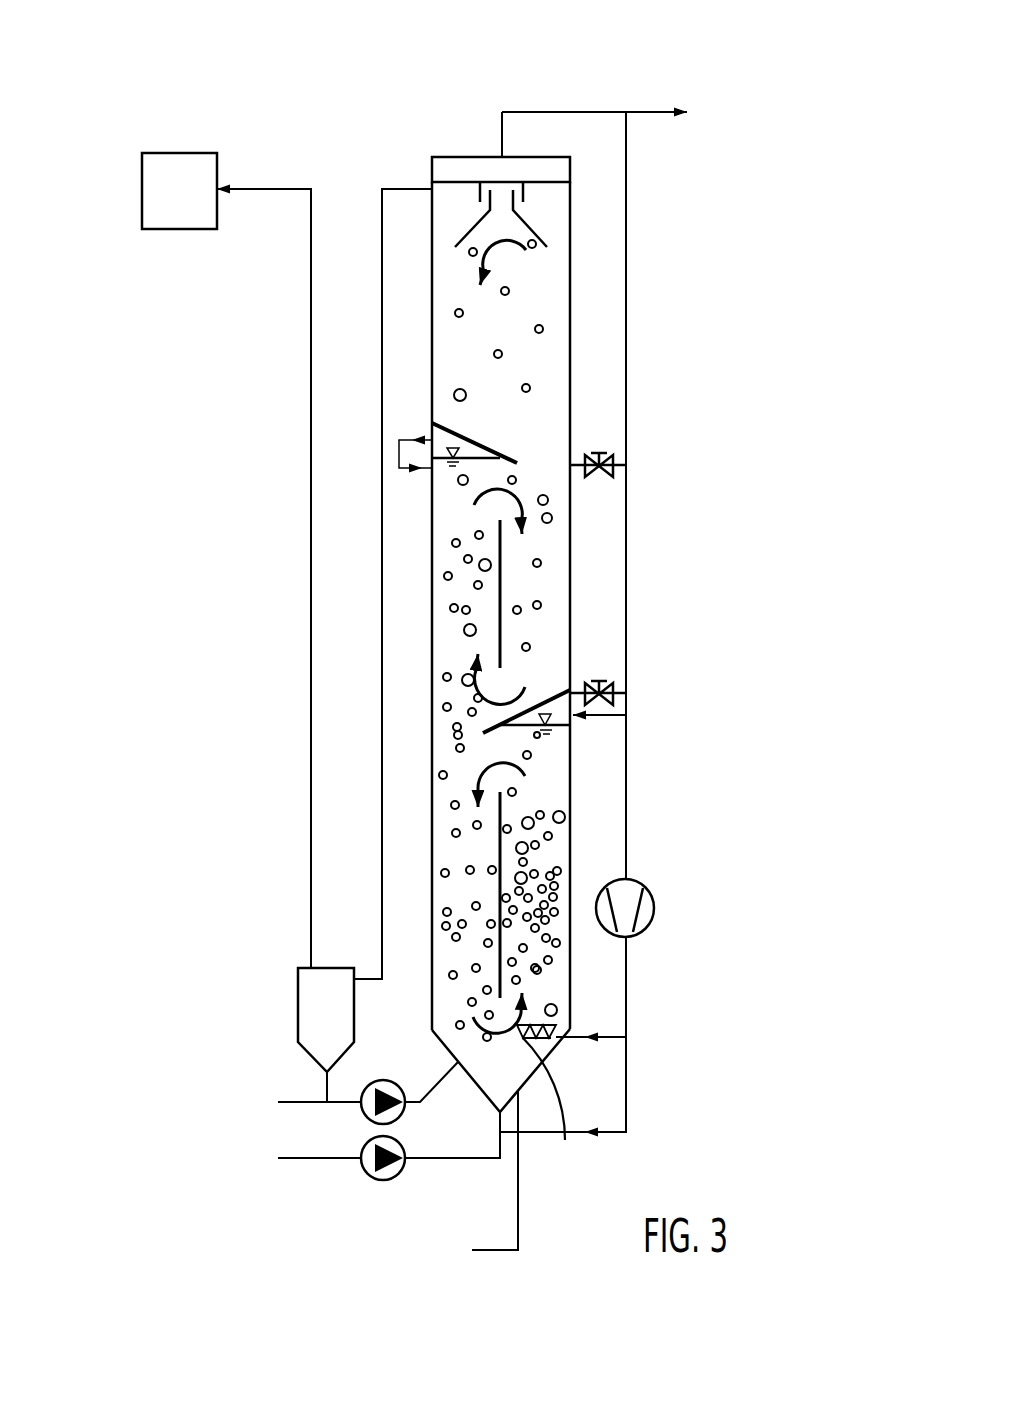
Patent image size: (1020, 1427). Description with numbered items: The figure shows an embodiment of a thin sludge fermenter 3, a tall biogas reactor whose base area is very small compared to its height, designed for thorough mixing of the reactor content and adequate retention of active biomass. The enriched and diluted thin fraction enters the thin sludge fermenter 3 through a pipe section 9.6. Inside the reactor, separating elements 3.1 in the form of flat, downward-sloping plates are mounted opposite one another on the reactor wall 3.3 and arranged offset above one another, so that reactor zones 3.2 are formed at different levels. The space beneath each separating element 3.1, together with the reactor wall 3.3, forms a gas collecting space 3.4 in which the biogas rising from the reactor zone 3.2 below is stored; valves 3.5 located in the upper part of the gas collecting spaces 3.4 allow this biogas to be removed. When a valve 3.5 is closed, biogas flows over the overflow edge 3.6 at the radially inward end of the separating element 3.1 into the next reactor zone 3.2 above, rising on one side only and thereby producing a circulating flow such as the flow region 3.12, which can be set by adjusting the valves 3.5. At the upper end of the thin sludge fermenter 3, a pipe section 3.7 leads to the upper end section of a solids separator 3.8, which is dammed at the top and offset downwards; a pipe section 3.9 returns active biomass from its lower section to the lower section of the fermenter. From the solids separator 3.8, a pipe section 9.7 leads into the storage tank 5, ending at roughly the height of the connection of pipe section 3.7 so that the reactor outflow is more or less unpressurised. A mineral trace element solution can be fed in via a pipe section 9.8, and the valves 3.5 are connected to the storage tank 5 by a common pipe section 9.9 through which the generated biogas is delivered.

The thin sludge fermenter 3 is at (450, 112).
The storage tank 5 is at (142, 188).
The separating element 3.1 is at (490, 447).
The reactor zone 3.2 is at (437, 356).
The reactor wall 3.3 is at (572, 281).
The gas collecting space 3.4 is at (434, 460).
The valve 3.5 is at (599, 470).
The overflow edge 3.6 is at (516, 463).
The pipe section 3.7 is at (392, 189).
The solids separator 3.8 is at (298, 999).
The pipe section 3.9 is at (427, 1096).
The flow deflection zone 3.12 is at (523, 684).
The pipe section 9.6 is at (292, 1161).
The pipe section 9.7 is at (311, 504).
The pipe section 9.8 is at (505, 1252).
The pipe section 9.9 is at (653, 113).